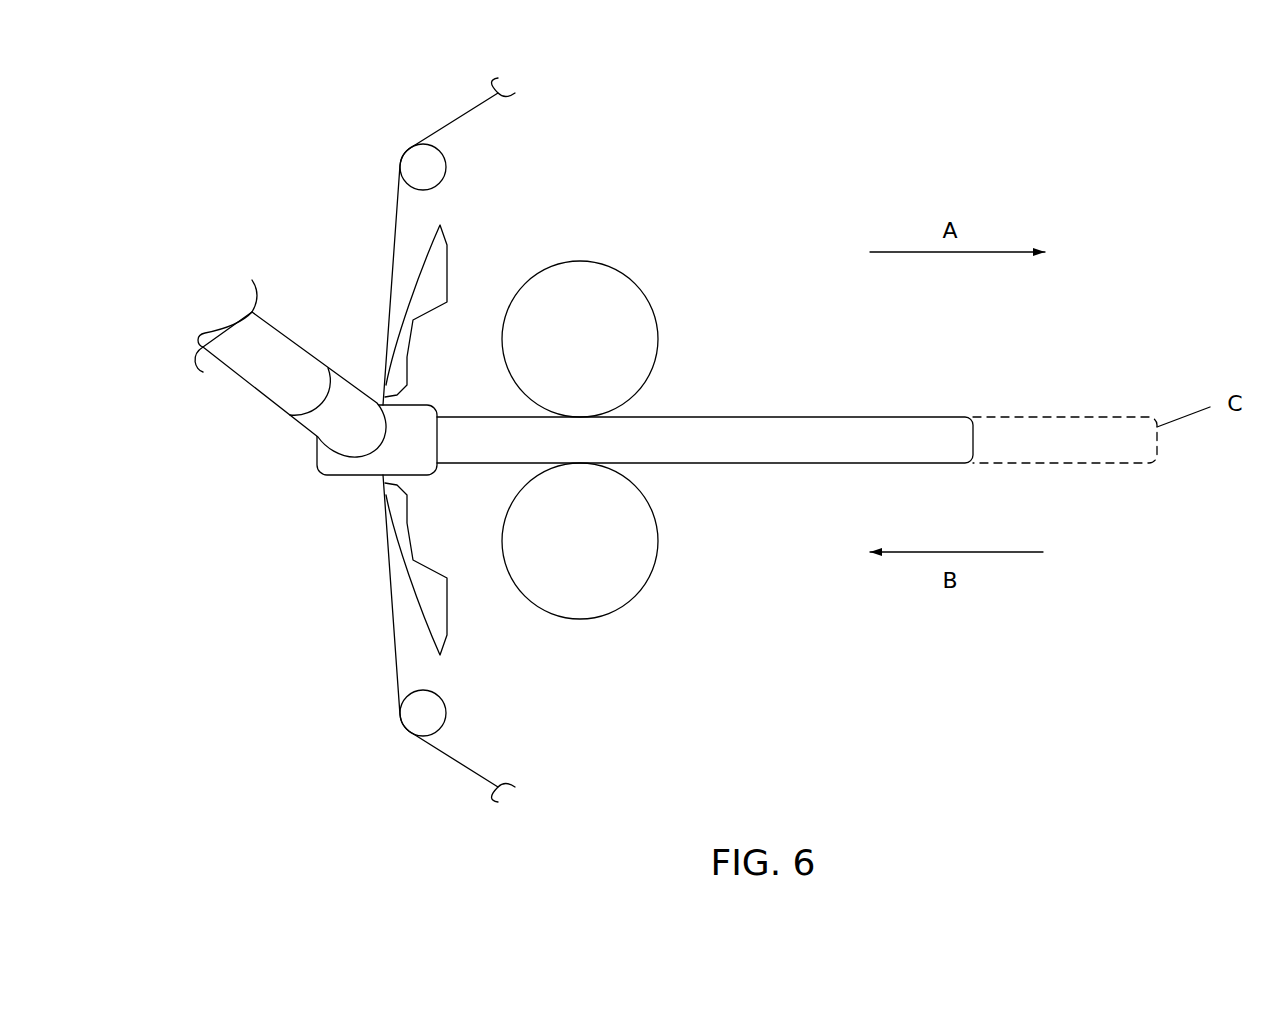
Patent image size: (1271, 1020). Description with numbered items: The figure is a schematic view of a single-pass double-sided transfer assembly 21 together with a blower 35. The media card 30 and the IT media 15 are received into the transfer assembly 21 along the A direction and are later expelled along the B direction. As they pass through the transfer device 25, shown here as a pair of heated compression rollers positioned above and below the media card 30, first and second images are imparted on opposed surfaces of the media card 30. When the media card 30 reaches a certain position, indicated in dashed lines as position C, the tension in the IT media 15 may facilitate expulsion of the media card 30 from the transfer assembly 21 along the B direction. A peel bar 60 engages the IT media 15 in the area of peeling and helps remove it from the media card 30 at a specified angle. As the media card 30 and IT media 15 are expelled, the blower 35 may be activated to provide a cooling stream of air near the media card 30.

The IT media 15 is at (392, 242).
The single-pass double-sided transfer assembly 21 is at (917, 118).
The transfer device 25 is at (623, 270).
The media card 30 is at (763, 415).
The blower 35 is at (312, 480).
The peel bar 60 is at (430, 283).